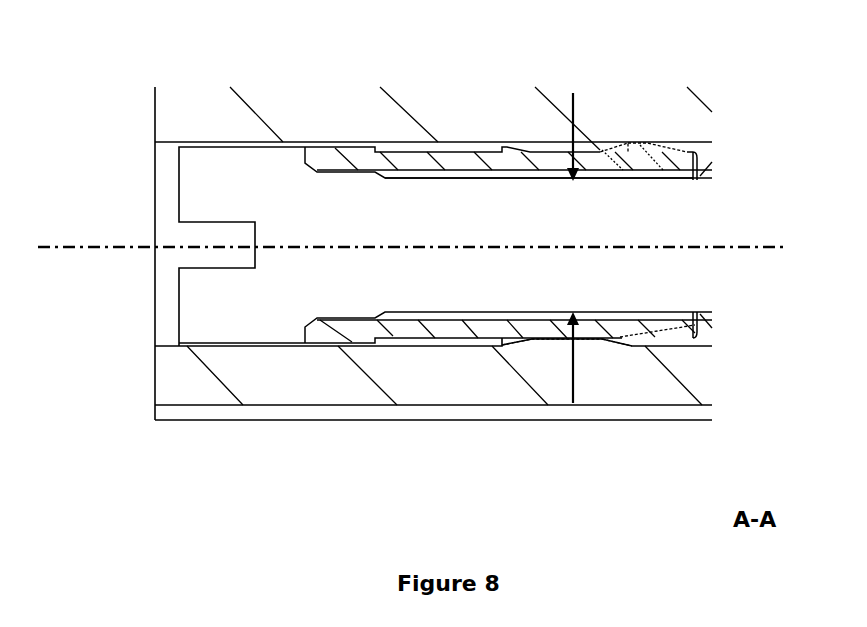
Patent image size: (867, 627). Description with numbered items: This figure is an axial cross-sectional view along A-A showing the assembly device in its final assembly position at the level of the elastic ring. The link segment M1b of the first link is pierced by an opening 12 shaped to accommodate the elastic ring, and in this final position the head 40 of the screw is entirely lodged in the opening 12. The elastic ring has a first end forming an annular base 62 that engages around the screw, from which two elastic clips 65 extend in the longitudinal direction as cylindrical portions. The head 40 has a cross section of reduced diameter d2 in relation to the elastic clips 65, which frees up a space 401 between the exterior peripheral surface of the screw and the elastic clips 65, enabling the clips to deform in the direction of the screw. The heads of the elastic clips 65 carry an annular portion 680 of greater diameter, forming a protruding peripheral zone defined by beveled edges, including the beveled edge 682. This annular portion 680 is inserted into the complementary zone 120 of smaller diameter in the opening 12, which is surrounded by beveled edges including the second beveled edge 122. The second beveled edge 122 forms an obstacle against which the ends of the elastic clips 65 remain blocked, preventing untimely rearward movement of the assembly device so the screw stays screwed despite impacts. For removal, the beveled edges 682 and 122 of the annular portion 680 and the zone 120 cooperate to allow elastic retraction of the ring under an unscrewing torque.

The opening 12 is at (165, 258).
The head of the screw 40 is at (197, 302).
The link segment M1b is at (212, 387).
The annular base 62 is at (332, 160).
The space 401 is at (444, 177).
The elastic clips 65 is at (510, 158).
The reduced diameter d2 is at (570, 236).
The beveled edge 682 is at (627, 150).
The annular portion 680 is at (643, 147).
The zone of smaller diameter 120 is at (553, 343).
The second beveled edge 122 is at (620, 348).